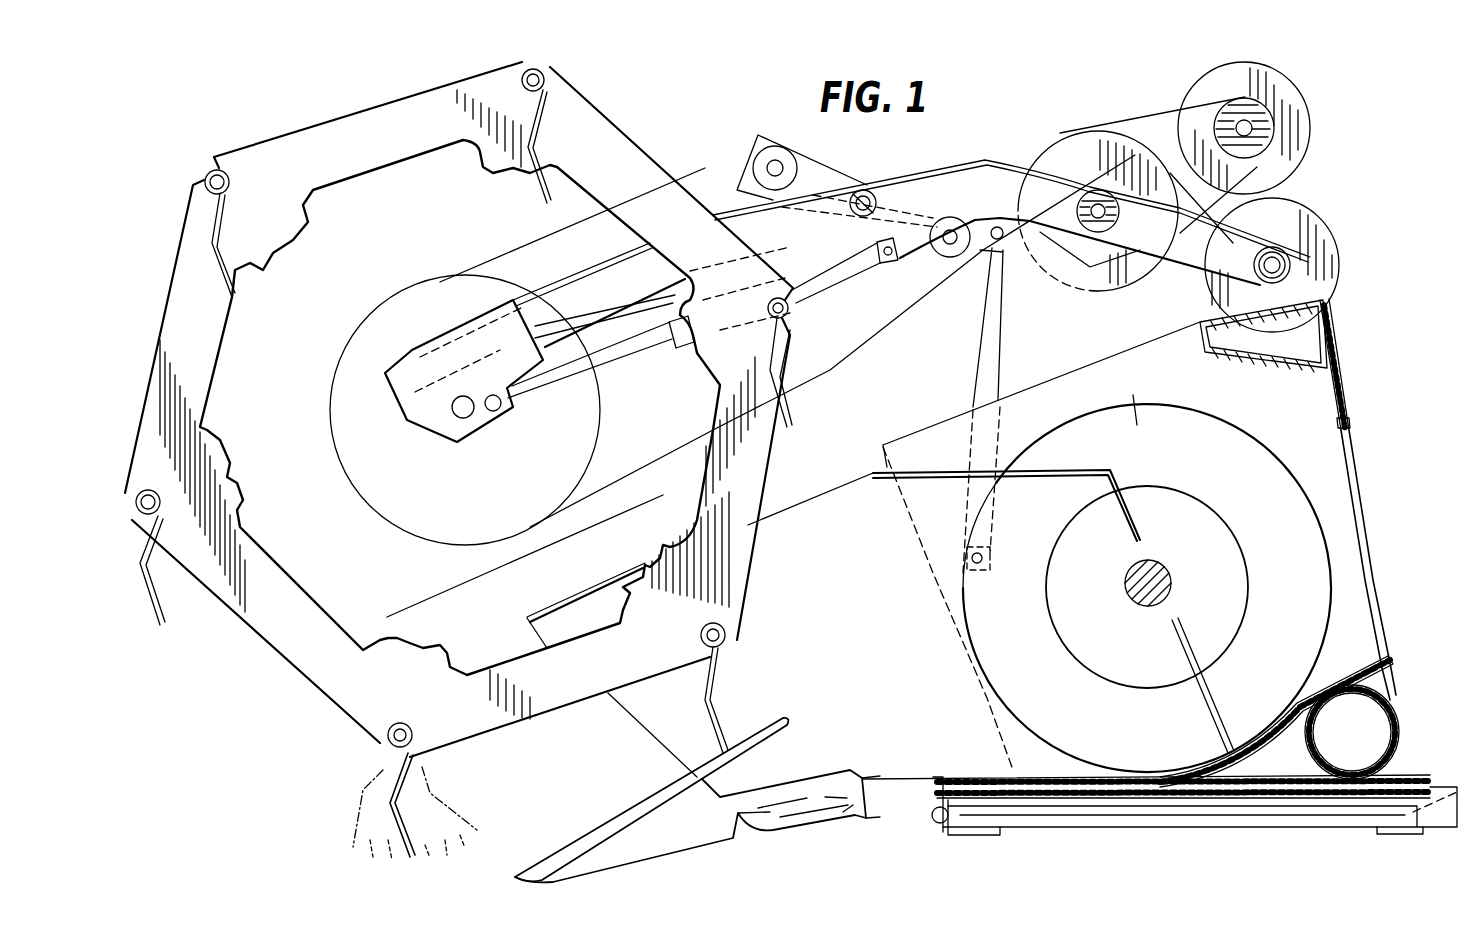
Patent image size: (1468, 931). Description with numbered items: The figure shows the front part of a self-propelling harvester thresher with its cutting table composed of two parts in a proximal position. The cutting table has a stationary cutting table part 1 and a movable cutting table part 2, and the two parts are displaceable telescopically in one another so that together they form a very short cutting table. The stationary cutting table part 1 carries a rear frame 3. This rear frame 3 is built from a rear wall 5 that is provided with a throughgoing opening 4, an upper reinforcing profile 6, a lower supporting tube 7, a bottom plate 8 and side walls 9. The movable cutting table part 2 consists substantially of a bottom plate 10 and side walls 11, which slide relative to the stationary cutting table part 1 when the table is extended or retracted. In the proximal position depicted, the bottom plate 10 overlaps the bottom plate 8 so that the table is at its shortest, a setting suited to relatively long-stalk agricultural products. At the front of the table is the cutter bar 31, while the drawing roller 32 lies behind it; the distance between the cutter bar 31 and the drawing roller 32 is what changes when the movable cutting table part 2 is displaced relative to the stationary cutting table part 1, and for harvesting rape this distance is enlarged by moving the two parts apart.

The stationary cutting table part 1 is at (1311, 399).
The movable cutting table part 2 is at (863, 522).
The rear frame 3 is at (1349, 407).
The throughgoing opening 4 is at (1361, 532).
The rear wall 5 is at (1350, 425).
The upper reinforcing profile 6 is at (1300, 337).
The lower supporting tube 7 is at (1387, 690).
The bottom plate 8 is at (1286, 720).
The side walls 9 is at (1135, 393).
The bottom plate 10 is at (977, 763).
The side walls 11 is at (863, 680).
The cutter bar 31 is at (795, 820).
The drawing roller 32 is at (1140, 745).